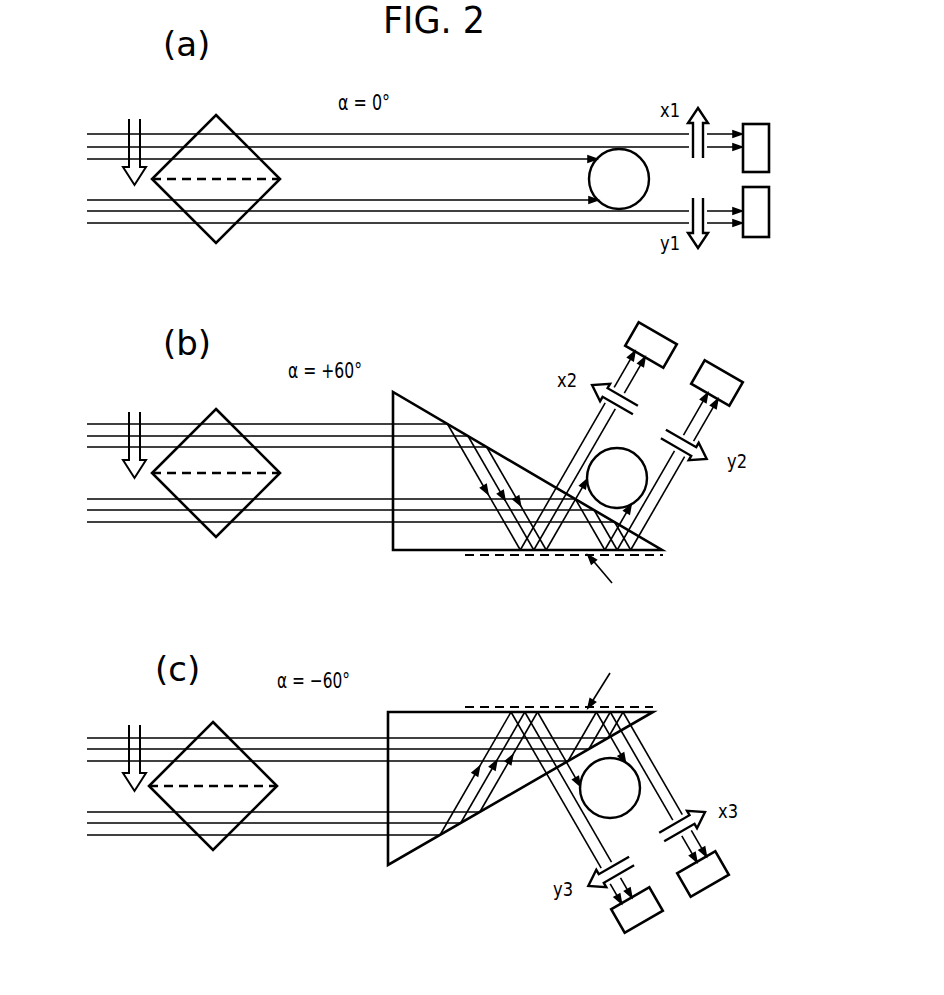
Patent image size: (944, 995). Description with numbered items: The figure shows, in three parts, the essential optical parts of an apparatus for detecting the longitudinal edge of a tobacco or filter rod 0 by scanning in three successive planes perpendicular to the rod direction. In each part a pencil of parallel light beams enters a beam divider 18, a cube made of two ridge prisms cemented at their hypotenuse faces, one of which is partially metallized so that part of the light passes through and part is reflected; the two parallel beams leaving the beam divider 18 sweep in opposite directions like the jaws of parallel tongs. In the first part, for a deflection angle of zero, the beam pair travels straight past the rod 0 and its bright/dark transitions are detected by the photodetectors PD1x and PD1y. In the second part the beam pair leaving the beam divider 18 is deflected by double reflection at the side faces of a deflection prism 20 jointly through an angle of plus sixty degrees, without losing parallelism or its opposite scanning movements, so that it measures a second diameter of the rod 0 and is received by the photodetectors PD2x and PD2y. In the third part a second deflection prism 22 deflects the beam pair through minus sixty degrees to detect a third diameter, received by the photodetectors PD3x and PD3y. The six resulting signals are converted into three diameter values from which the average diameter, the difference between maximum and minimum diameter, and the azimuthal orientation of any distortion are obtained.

The beam divider 18 is at (196, 205).
The deflection prism 20 is at (414, 538).
The second deflection prism 22 is at (430, 722).
The rod 0 is at (614, 157).
The photodetector PD1x is at (752, 128).
The photodetector PD1y is at (750, 237).
The photodetector PD2x is at (632, 337).
The photodetector PD2y is at (727, 394).
The photodetector PD3x is at (707, 875).
The photodetector PD3y is at (637, 915).